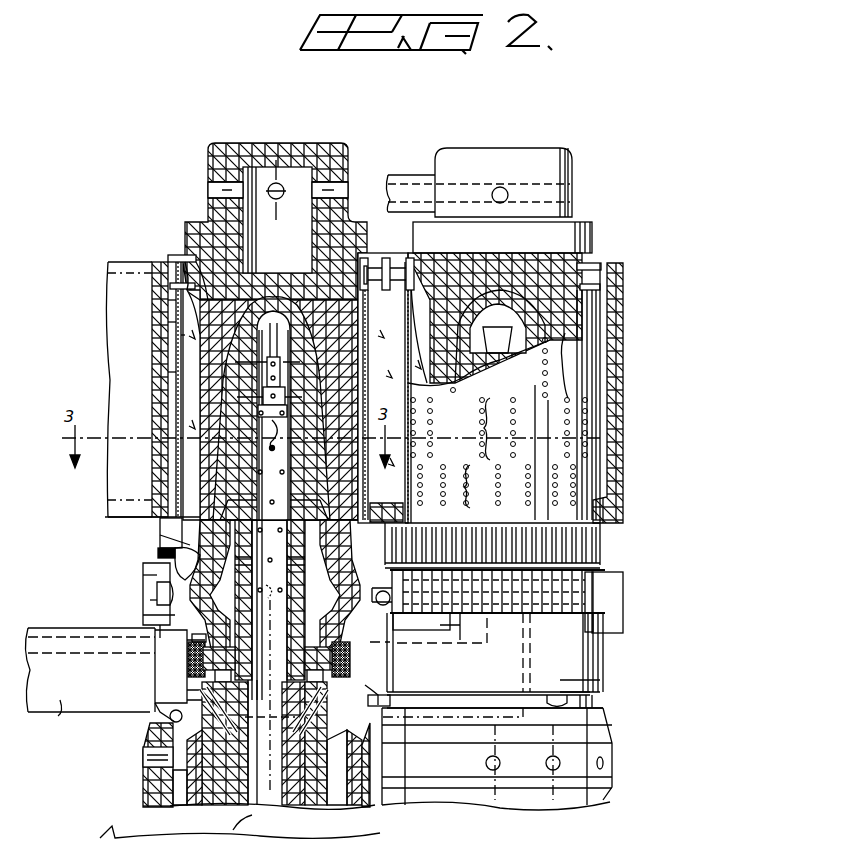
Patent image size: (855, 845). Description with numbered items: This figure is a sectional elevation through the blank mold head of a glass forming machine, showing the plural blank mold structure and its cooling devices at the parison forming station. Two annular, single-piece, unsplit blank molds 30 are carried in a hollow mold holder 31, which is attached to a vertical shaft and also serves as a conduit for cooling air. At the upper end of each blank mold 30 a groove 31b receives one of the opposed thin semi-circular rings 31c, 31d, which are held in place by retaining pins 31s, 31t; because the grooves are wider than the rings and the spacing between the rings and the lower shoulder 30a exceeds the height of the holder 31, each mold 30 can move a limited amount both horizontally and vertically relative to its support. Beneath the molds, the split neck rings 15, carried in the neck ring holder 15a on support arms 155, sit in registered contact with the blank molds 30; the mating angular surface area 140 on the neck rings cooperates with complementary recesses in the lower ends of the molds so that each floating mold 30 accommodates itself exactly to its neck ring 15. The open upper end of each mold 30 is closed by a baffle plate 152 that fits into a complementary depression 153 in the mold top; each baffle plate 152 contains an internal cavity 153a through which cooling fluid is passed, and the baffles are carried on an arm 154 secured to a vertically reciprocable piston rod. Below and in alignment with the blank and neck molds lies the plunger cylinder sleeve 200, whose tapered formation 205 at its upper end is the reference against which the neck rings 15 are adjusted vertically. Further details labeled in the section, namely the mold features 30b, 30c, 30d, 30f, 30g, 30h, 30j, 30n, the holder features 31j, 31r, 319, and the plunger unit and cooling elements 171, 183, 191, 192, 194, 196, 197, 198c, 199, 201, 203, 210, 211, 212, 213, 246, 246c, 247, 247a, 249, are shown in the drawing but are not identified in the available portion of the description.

The neck ring 15 is at (160, 632).
The neck ring holder 15a is at (145, 576).
The blank mold 30 is at (590, 262).
The lower shoulder 30a is at (160, 524).
The chamber liner 30b is at (186, 372).
The chamber body 30c is at (200, 474).
The liner holes 30d is at (575, 478).
The air passage 30f is at (383, 388).
The liner wall 30g is at (590, 408).
The dome 30h is at (580, 325).
The chamber bottom 30j is at (160, 537).
The annular passage 30n is at (188, 398).
The hollow mold holder 31 is at (158, 292).
The groove 31b is at (200, 323).
The semi-circular ring 31c is at (186, 265).
The semi-circular ring 31d is at (176, 302).
The casing wedge 31j is at (385, 501).
The casing portion 31r is at (178, 336).
The retaining pin 31s is at (176, 258).
The retaining pin 31t is at (380, 260).
The casing shoulder 319 is at (203, 258).
The angular surface area 140 is at (165, 550).
The baffle plate 152 is at (455, 148).
The complementary depression 153 is at (366, 258).
The internal cavity 153a is at (276, 210).
The baffle arm 154 is at (418, 184).
The support arm 155 is at (58, 716).
The base ring 171 is at (145, 775).
The nozzle sleeve 183 is at (300, 800).
The nozzle sleeve 191 is at (204, 818).
The nozzle wall 192 is at (215, 492).
The packing 194 is at (190, 648).
The packing gland 196 is at (192, 637).
The nut 197 is at (187, 692).
The sleeve end 198c is at (254, 823).
The needle valve 199 is at (266, 420).
The plunger cylinder sleeve 200 is at (180, 790).
The spacer 201 is at (600, 701).
The valve guide 203 is at (264, 378).
The tapered formation 205 is at (213, 676).
The ring 210 is at (143, 616).
The bolt 211 is at (158, 592).
The pin 212 is at (176, 730).
The bolt 213 is at (170, 716).
The conduit 246 is at (84, 660).
The conduit flange 246c is at (150, 600).
The grid plate 247 is at (160, 568).
The grid plate openings 247a is at (480, 613).
The fins 249 is at (162, 553).